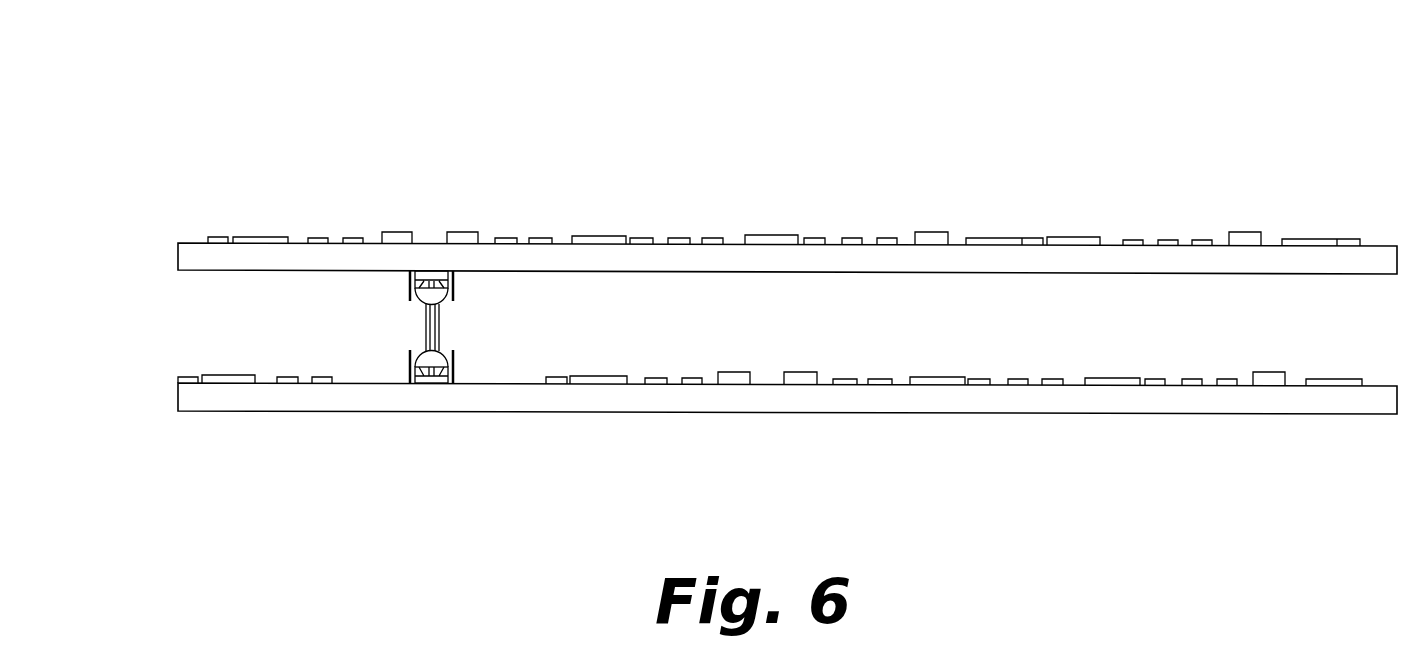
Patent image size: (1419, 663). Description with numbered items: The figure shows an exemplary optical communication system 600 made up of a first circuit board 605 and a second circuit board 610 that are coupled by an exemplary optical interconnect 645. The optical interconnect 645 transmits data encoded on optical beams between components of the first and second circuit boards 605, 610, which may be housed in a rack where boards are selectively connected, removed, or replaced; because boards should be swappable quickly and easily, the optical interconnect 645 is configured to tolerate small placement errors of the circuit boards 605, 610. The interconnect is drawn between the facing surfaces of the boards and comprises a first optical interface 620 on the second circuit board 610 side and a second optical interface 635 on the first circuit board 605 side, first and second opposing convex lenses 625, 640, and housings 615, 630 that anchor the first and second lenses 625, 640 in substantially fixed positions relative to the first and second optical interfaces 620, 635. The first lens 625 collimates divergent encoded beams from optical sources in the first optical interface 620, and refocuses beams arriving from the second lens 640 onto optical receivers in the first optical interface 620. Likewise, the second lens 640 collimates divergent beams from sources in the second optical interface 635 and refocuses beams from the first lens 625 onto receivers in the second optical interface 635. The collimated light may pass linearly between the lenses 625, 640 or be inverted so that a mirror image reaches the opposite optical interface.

The system 600 is at (229, 118).
The first circuit board 605 is at (198, 257).
The second circuit board 610 is at (212, 400).
The housing 615 is at (462, 362).
The first optical interface 620 is at (433, 384).
The first convex lens 625 is at (423, 355).
The housing 630 is at (402, 292).
The second optical interface 635 is at (432, 283).
The second convex lens 640 is at (442, 299).
The optical interconnect 645 is at (314, 338).